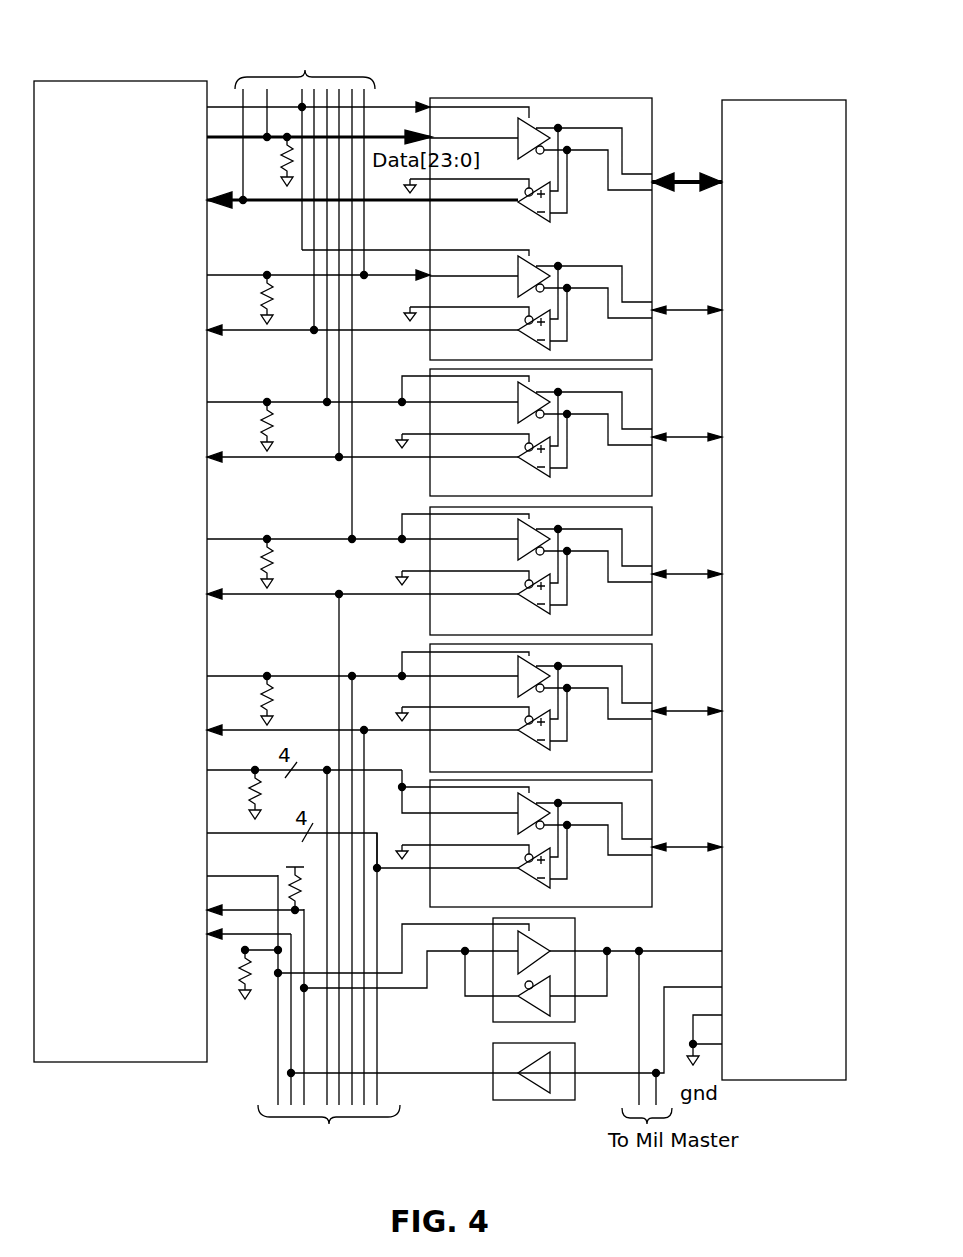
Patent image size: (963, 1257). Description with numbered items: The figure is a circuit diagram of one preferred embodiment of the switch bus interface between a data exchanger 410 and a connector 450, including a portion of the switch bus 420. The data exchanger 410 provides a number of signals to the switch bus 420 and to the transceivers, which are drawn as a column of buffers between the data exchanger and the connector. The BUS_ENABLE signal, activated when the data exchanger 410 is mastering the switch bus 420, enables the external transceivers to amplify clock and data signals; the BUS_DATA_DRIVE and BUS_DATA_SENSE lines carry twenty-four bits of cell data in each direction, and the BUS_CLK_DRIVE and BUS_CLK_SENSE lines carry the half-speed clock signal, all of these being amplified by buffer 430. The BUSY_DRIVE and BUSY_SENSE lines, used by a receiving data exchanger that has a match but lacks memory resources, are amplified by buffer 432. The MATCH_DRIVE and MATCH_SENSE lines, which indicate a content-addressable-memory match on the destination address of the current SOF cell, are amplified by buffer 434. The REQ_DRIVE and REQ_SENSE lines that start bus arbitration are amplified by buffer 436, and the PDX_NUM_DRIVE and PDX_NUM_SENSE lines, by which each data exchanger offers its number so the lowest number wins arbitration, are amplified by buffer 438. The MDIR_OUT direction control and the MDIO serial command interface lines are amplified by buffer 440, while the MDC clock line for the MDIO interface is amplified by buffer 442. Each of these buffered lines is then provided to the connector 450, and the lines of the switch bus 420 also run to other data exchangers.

The data exchanger 410 is at (99, 80).
The switch bus 420 is at (226, 74).
The buffer 430 is at (632, 97).
The buffer 432 is at (655, 403).
The buffer 434 is at (655, 541).
The buffer 436 is at (655, 678).
The buffer 438 is at (655, 815).
The buffer 440 is at (578, 936).
The buffer 442 is at (493, 1093).
The connector 450 is at (816, 98).